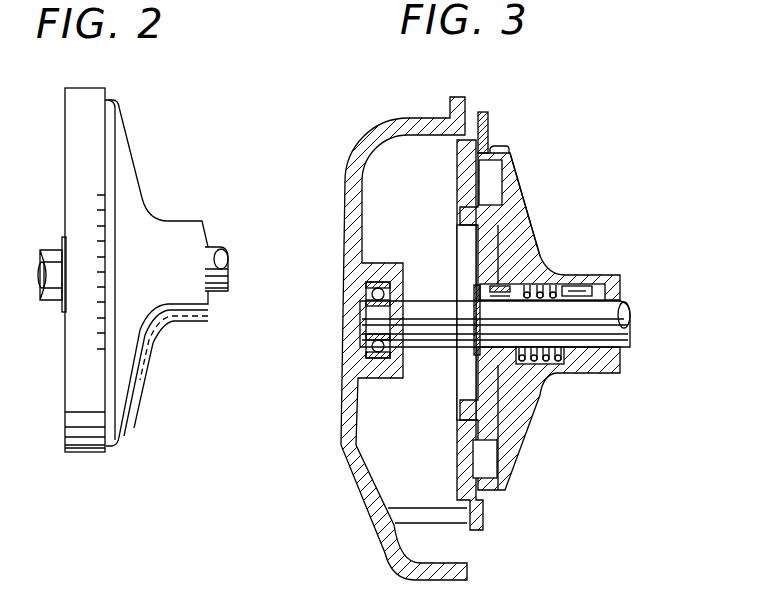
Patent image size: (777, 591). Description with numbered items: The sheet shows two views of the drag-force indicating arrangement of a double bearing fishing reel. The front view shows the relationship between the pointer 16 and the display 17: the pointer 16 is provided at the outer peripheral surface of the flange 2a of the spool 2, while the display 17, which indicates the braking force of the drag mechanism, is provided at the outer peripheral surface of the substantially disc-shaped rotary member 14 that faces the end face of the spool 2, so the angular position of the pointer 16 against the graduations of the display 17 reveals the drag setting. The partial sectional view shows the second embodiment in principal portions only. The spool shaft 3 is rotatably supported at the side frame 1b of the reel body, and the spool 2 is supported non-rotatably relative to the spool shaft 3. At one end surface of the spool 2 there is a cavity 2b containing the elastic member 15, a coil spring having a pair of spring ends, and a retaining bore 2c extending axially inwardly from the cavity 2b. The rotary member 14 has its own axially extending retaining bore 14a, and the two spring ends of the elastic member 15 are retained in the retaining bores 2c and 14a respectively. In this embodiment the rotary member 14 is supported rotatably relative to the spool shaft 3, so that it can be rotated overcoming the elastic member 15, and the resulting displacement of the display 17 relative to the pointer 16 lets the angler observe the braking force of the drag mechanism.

In FIG. 3, the side frame 1b is at (362, 150).
In FIG. 2, the spool 2 is at (185, 322).
In FIG. 3, the spool 2 is at (615, 285).
In FIG. 2, the flange 2a is at (126, 413).
In FIG. 3, the flange 2a is at (517, 186).
In FIG. 3, the cavity 2b is at (533, 270).
In FIG. 3, the retaining bore 2c is at (586, 283).
In FIG. 2, the spool shaft 3 is at (228, 276).
In FIG. 3, the spool shaft 3 is at (626, 325).
In FIG. 2, the rotary member 14 is at (72, 375).
In FIG. 3, the rotary member 14 is at (457, 184).
In FIG. 3, the retaining bore 14a is at (476, 287).
In FIG. 3, the elastic member 15 is at (548, 281).
In FIG. 3, the pointer 16 is at (510, 152).
In FIG. 2, the display 17 is at (78, 276).
In FIG. 3, the display 17 is at (490, 130).